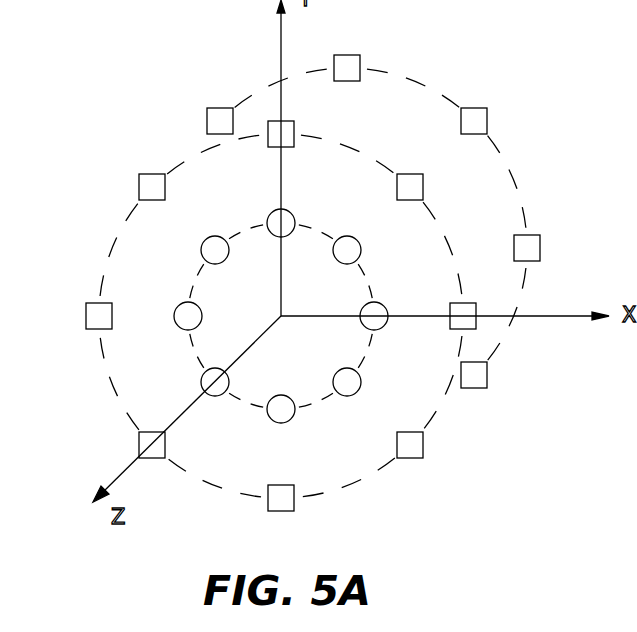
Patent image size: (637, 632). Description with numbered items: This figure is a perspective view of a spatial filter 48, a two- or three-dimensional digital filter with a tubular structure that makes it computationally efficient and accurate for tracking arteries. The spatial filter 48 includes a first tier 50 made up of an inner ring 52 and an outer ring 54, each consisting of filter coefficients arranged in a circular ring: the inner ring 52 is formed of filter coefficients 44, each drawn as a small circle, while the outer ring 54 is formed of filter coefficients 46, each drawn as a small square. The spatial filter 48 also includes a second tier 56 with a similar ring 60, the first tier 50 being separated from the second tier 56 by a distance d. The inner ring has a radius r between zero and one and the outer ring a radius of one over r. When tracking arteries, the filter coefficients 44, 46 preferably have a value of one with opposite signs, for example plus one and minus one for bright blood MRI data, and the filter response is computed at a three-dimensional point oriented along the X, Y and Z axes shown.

The filter coefficients 44 is at (361, 381).
The filter coefficients 46 is at (557, 234).
The spatial filter 48 is at (106, 38).
The first tier 50 is at (180, 136).
The inner ring 52 is at (246, 400).
The outer ring 54 is at (109, 393).
The second tier 56 is at (230, 47).
The ring 60 is at (514, 186).